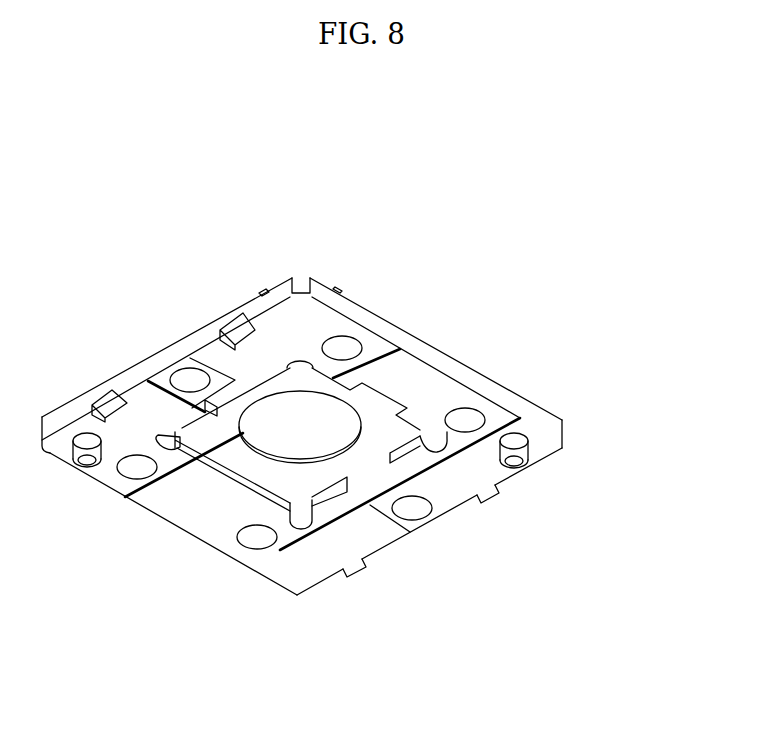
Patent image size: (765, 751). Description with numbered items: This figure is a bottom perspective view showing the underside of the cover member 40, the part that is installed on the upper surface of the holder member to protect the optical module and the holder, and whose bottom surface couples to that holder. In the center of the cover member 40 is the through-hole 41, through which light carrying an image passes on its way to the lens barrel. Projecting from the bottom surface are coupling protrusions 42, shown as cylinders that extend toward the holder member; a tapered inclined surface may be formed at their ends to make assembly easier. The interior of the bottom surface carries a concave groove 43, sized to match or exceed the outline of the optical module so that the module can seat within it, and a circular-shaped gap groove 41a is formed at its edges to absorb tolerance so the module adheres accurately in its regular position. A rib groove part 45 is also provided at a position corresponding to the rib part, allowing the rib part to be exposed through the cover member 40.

The cover member 40 is at (462, 366).
The through-hole 41 is at (343, 449).
The gap groove 41a is at (301, 528).
The coupling protrusion 42 is at (527, 450).
The concave groove 43 is at (285, 466).
The rib groove part 45 is at (490, 482).